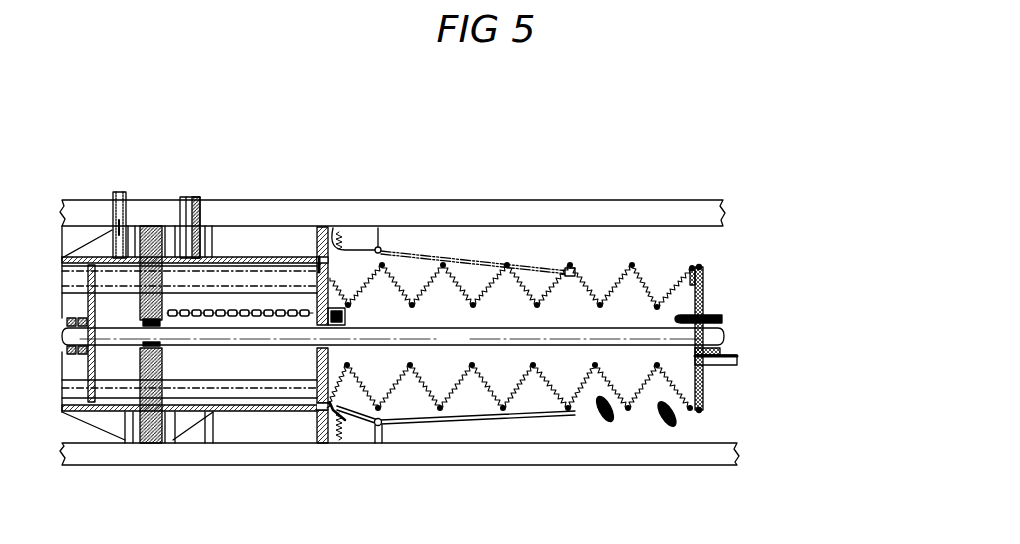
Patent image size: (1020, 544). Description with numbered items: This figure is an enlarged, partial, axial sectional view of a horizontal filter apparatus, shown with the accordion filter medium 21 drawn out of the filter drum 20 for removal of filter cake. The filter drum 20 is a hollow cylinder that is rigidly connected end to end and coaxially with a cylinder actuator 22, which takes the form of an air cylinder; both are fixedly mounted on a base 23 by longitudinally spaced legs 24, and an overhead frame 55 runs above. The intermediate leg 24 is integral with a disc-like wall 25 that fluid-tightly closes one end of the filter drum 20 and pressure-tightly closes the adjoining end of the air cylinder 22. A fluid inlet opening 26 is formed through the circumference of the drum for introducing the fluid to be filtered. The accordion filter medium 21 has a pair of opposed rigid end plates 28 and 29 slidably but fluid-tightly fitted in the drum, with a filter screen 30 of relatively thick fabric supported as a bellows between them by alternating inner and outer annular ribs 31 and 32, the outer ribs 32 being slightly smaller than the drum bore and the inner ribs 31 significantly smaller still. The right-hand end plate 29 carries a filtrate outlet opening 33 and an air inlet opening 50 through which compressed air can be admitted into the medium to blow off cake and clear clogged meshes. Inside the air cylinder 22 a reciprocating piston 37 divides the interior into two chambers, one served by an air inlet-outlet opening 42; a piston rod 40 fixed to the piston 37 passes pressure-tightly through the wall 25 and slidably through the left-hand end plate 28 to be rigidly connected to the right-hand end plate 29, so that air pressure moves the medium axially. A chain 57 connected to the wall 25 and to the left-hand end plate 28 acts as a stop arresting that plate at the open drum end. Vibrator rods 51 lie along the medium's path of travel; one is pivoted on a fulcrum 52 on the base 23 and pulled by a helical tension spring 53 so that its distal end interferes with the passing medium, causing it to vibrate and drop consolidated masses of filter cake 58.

The filter drum 20 is at (213, 412).
The accordion filter medium 21 is at (652, 275).
The cylinder actuator 22 is at (91, 380).
The base 23 is at (612, 458).
The legs 24 is at (318, 428).
The disc-like wall 25 is at (150, 240).
The fluid inlet opening 26 is at (190, 215).
The left-hand end plate 28 is at (315, 287).
The right-hand end plate 29 is at (703, 396).
The filter screen 30 is at (403, 287).
The inner annular ribs 31 is at (600, 303).
The outer annular ribs 32 is at (568, 268).
The filtrate outlet opening 33 is at (722, 354).
The reciprocating piston 37 is at (60, 290).
The piston rod 40 is at (445, 338).
The air inlet-outlet opening 42 is at (113, 195).
The air inlet opening 50 is at (713, 314).
The vibrator rods 51 is at (540, 415).
The fulcrum 52 is at (380, 433).
The helical tension spring 53 is at (347, 435).
The overhead frame 55 is at (483, 217).
The chain 57 is at (240, 303).
The filter cake 58 is at (675, 427).